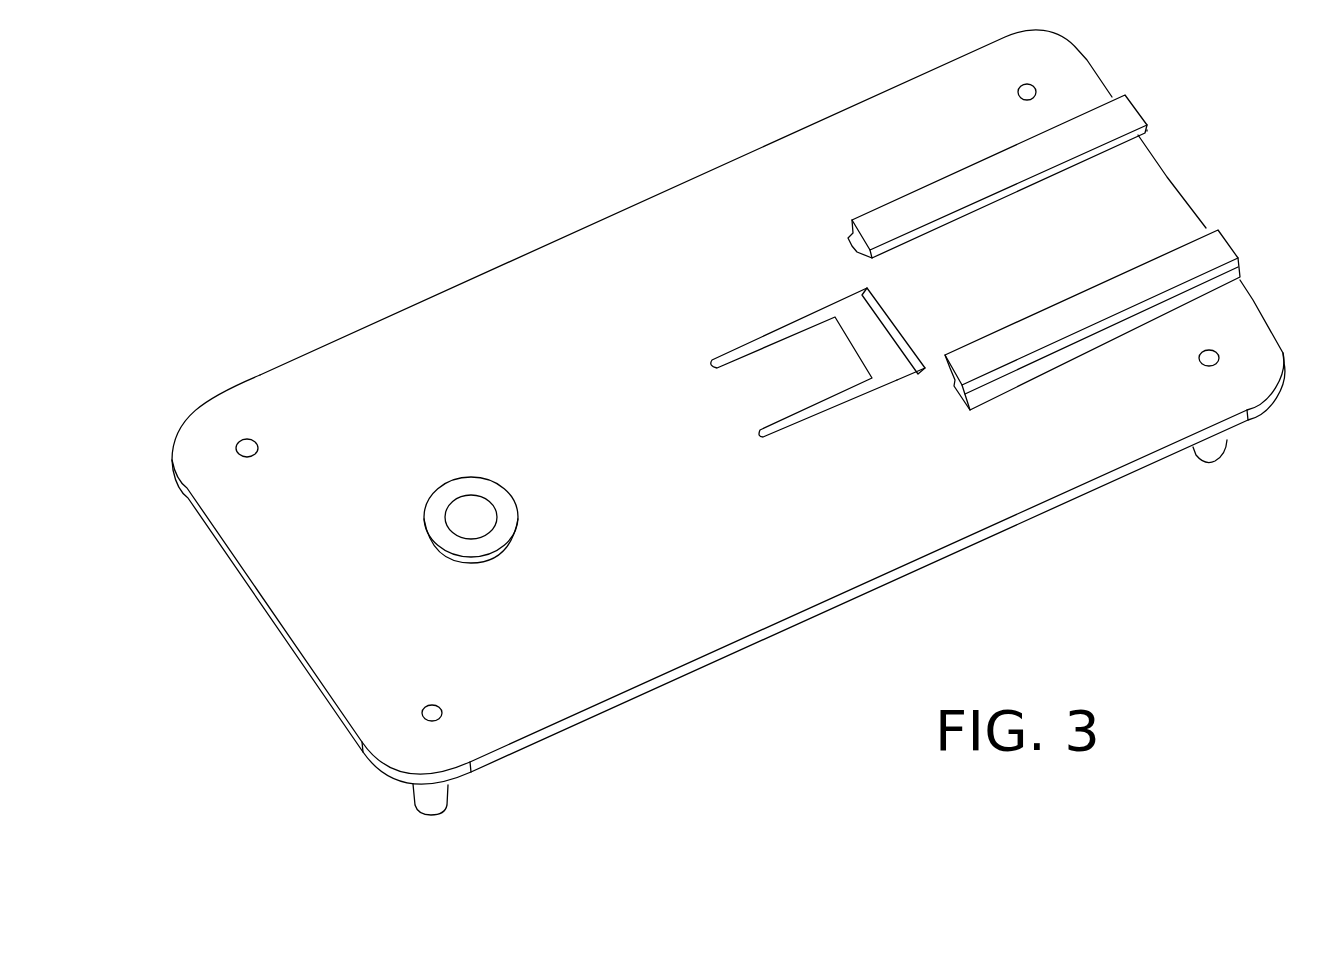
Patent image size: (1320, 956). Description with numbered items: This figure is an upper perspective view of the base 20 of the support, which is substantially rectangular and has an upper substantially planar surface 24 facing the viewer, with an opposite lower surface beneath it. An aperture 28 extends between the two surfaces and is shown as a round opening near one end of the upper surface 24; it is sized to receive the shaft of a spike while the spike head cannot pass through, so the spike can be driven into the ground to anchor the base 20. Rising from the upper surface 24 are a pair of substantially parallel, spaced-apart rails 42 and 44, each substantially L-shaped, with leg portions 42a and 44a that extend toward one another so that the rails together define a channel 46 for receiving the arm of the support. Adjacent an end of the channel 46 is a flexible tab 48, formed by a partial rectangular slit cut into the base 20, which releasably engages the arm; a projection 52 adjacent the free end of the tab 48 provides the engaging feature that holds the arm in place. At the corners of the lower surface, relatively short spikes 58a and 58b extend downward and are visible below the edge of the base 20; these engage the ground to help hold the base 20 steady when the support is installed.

The base 20 is at (728, 407).
The upper substantially planar surface 24 is at (497, 406).
The aperture 28 is at (475, 513).
The rail 42 is at (967, 176).
The leg portion 42a is at (987, 172).
The rail 44 is at (1092, 349).
The leg portion 44a is at (1040, 328).
The channel 46 is at (1153, 185).
The flexible tab 48 is at (824, 359).
The projection 52 is at (880, 308).
The spike 58a is at (1215, 462).
The spike 58b is at (443, 817).